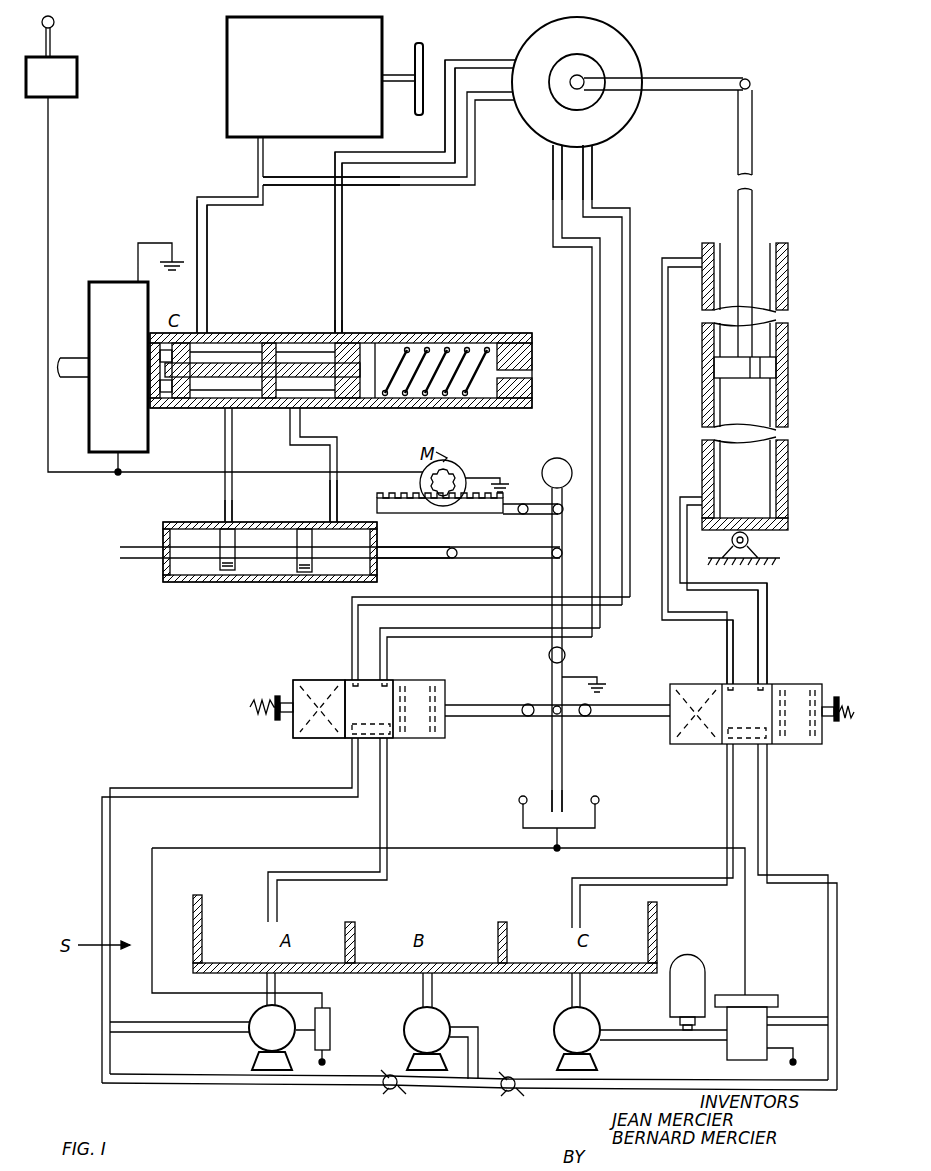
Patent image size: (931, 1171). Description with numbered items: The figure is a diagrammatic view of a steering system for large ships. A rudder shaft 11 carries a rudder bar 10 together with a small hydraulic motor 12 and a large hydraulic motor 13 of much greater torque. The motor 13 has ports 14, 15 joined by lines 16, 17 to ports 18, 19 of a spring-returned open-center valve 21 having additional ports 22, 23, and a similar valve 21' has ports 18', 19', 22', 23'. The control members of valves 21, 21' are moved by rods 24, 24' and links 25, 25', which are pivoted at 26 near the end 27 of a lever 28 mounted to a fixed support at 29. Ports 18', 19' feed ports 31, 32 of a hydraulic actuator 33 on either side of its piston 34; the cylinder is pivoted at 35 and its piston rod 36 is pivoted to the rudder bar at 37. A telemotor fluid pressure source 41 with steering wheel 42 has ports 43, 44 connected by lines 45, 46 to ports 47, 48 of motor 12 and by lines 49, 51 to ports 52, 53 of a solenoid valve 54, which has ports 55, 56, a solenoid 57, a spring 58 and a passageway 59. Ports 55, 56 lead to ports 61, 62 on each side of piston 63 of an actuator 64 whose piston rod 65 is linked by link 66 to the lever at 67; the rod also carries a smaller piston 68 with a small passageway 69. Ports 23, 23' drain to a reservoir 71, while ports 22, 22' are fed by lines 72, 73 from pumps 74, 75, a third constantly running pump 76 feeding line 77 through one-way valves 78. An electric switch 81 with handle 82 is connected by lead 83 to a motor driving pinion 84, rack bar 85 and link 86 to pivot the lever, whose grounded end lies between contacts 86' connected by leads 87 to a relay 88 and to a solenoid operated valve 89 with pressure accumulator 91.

The rudder bar 10 is at (700, 76).
The rudder shaft 11 is at (582, 79).
The hydraulic motor 12 is at (573, 62).
The hydraulic motor 13 is at (636, 62).
The port 14 is at (552, 148).
The port 15 is at (596, 150).
The line 16 is at (552, 197).
The line 17 is at (592, 192).
The port 18 is at (322, 692).
The port 19 is at (391, 690).
The valve 21 is at (377, 690).
The port 22 is at (415, 697).
The port 23 is at (434, 775).
The rod 24 is at (502, 727).
The link 25 is at (529, 726).
The pivot connection 26 is at (548, 705).
The lever end 27 is at (562, 795).
The lever 28 is at (550, 580).
The pivot 29 is at (567, 655).
The port 31 is at (700, 497).
The port 32 is at (698, 258).
The hydraulic actuator 33 is at (792, 408).
The piston 34 is at (755, 368).
The pivot mounting 35 is at (755, 541).
The piston rod 36 is at (750, 210).
The pivot connection 37 is at (750, 80).
The fluid pressure source 41 is at (312, 87).
The steering wheel 42 is at (425, 52).
The port 43 is at (258, 140).
The port 44 is at (300, 177).
The line 45 is at (397, 165).
The line 46 is at (438, 160).
The port 47 is at (550, 100).
The port 48 is at (528, 60).
The line 49 is at (207, 258).
The line 51 is at (317, 242).
The port 52 is at (215, 348).
The port 53 is at (343, 335).
The valve 54 is at (497, 333).
The port 55 is at (225, 410).
The port 56 is at (292, 413).
The solenoid 57 is at (103, 295).
The spring 58 is at (445, 355).
The passageway 59 is at (250, 365).
The port 61 is at (223, 522).
The port 62 is at (330, 522).
The piston 63 is at (297, 582).
The actuator 64 is at (170, 582).
The piston rod 65 is at (420, 540).
The link 66 is at (508, 545).
The pivot connection 67 is at (555, 552).
The piston 68 is at (235, 580).
The passageway 69 is at (262, 530).
The reservoir 71 is at (665, 928).
The line 72 is at (262, 788).
The line 73 is at (767, 848).
The pump 74 is at (260, 1020).
The pump 75 is at (588, 1020).
The pump 76 is at (412, 1020).
The line 77 is at (448, 1088).
The one-way valve 78 is at (384, 1092).
The electric switch 81 is at (65, 85).
The control handle 82 is at (52, 45).
The lead 83 is at (52, 170).
The pinion 84 is at (450, 480).
The rack bar 85 is at (475, 513).
The link 86 is at (533, 495).
The lead 87 is at (462, 852).
The relay 88 is at (327, 1030).
The solenoid operated valve 89 is at (750, 1020).
The pressure accumulator 91 is at (695, 987).
The port 18' is at (787, 633).
The port 19' is at (710, 652).
The valve 21' is at (743, 700).
The port 22' is at (782, 772).
The port 23' is at (652, 836).
The rod 24' is at (615, 728).
The link 25' is at (585, 726).
The contacts 86' is at (562, 823).